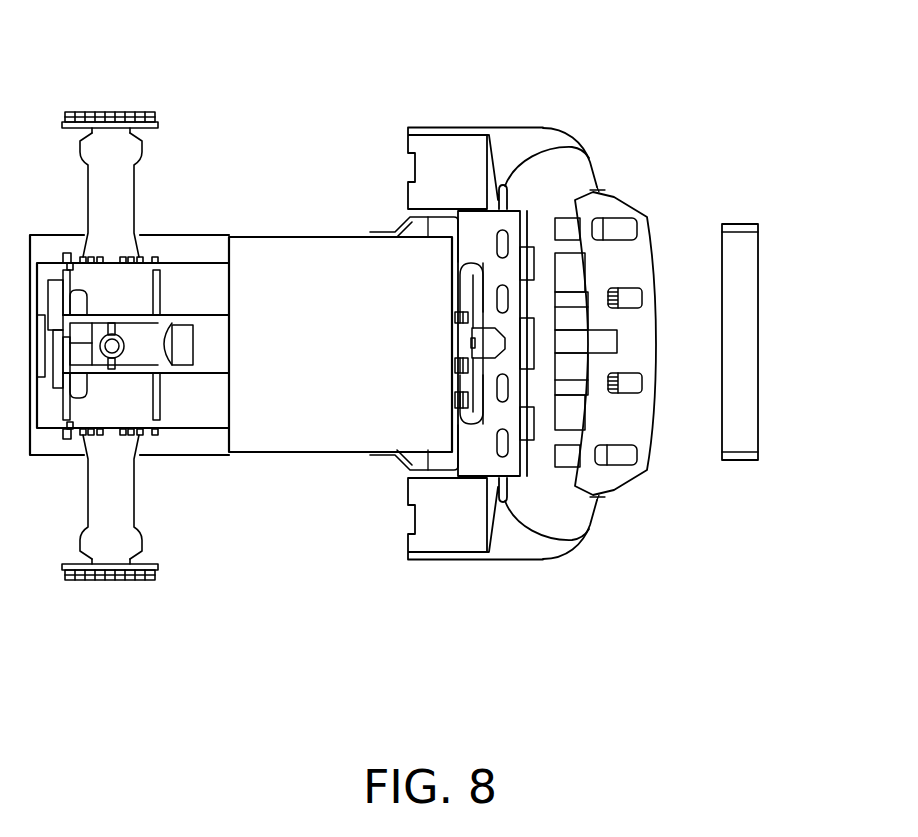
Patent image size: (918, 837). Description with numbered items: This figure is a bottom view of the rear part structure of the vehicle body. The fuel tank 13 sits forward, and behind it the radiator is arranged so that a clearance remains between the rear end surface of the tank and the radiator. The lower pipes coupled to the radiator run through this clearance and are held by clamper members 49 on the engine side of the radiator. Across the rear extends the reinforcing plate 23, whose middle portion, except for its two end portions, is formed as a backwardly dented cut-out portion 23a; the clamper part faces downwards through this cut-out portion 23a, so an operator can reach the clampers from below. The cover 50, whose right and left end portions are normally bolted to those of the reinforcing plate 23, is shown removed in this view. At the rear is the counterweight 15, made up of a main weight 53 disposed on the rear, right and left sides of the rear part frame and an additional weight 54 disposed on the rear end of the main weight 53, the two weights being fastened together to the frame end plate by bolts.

The fuel tank 13 is at (291, 437).
The counterweight 15 is at (570, 116).
The reinforcing plate 23 is at (503, 228).
The cut-out portion 23a is at (476, 388).
The clamper member 49 is at (455, 317).
The cover 50 is at (746, 277).
The main weight 53 is at (530, 138).
The additional weight 54 is at (648, 217).